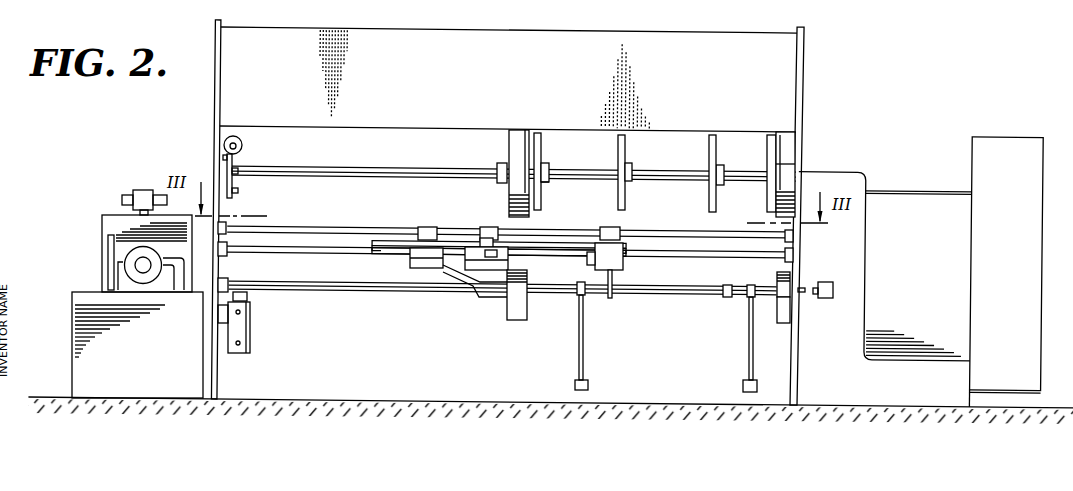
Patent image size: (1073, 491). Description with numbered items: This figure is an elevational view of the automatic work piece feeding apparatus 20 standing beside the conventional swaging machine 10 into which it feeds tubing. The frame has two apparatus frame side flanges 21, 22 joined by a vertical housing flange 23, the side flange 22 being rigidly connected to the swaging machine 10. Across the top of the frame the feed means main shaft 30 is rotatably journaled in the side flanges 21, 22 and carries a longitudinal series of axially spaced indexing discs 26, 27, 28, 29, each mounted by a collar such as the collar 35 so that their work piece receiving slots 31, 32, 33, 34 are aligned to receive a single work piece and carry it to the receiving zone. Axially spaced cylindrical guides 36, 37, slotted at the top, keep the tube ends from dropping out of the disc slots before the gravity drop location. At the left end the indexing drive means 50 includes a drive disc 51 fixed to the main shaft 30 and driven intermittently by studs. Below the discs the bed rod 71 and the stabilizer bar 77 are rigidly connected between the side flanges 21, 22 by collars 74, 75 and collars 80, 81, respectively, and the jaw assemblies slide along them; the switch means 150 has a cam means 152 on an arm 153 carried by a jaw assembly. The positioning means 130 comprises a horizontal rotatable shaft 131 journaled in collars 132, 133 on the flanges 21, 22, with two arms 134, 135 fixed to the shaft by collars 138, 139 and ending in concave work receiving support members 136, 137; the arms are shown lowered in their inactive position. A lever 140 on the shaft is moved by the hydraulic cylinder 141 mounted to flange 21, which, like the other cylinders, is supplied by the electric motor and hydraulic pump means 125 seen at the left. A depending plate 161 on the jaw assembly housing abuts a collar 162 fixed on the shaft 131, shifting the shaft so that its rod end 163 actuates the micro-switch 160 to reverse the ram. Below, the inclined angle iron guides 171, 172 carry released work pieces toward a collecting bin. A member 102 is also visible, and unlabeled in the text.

The swaging machine 10 is at (939, 163).
The automatic work piece feeding apparatus 20 is at (826, 70).
The apparatus frame side flange 21 is at (213, 103).
The apparatus frame side flange 22 is at (804, 105).
The vertical housing flange 23 is at (453, 47).
The indexing disc 26 is at (551, 168).
The indexing disc 27 is at (636, 168).
The indexing disc 28 is at (706, 193).
The indexing disc 29 is at (770, 164).
The feed means main shaft 30 is at (425, 167).
The work piece receiving slot 31 is at (548, 143).
The work piece receiving slot 32 is at (630, 146).
The work piece receiving slot 33 is at (716, 143).
The work piece receiving slot 34 is at (772, 150).
The collar 35 is at (547, 183).
The cylindrical guide 36 is at (512, 140).
The cylindrical guide 37 is at (785, 143).
The indexing drive means 50 is at (255, 139).
The drive disc 51 is at (233, 184).
The bed rod 71 is at (330, 254).
The collar 74 is at (232, 257).
The collar 75 is at (800, 252).
The stabilizer bar 77 is at (313, 227).
The collar 80 is at (223, 219).
The collar 81 is at (800, 235).
The frame member 102 is at (732, 4).
The electric motor and hydraulic pump means 125 is at (111, 210).
The positioning means 130 is at (260, 324).
The positioning means shaft 131 is at (387, 290).
The collar 132 is at (226, 279).
The collar 133 is at (782, 288).
The arm 134 is at (586, 336).
The arm 135 is at (748, 338).
The concave work receiving support member 136 is at (590, 384).
The concave work receiving support member 137 is at (744, 388).
The collar 138 is at (576, 296).
The collar 139 is at (742, 298).
The lever 140 is at (248, 297).
The hydraulic cylinder 141 is at (252, 342).
The switch means 150 is at (488, 278).
The cam means 152 is at (379, 240).
The arm 153 is at (537, 244).
The micro-switch 160 is at (835, 290).
The depending plate 161 is at (614, 284).
The collar 162 is at (710, 279).
The rod end 163 is at (804, 297).
The angle iron guide 171 is at (514, 318).
The angle iron guide 172 is at (788, 324).